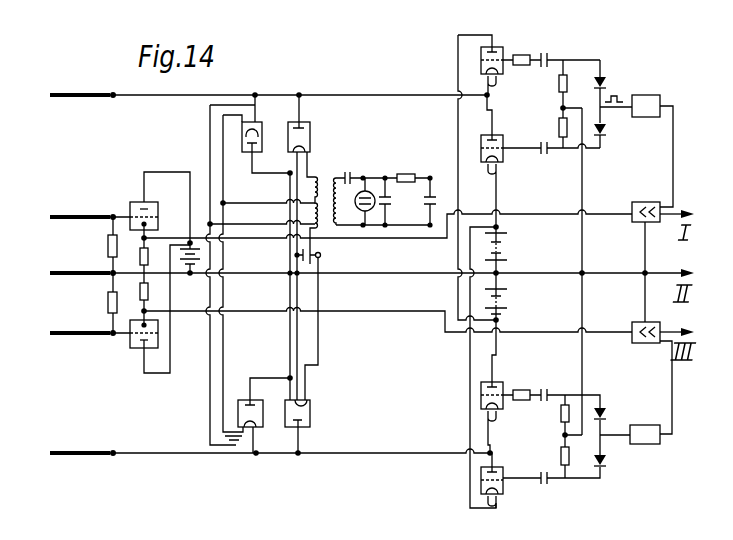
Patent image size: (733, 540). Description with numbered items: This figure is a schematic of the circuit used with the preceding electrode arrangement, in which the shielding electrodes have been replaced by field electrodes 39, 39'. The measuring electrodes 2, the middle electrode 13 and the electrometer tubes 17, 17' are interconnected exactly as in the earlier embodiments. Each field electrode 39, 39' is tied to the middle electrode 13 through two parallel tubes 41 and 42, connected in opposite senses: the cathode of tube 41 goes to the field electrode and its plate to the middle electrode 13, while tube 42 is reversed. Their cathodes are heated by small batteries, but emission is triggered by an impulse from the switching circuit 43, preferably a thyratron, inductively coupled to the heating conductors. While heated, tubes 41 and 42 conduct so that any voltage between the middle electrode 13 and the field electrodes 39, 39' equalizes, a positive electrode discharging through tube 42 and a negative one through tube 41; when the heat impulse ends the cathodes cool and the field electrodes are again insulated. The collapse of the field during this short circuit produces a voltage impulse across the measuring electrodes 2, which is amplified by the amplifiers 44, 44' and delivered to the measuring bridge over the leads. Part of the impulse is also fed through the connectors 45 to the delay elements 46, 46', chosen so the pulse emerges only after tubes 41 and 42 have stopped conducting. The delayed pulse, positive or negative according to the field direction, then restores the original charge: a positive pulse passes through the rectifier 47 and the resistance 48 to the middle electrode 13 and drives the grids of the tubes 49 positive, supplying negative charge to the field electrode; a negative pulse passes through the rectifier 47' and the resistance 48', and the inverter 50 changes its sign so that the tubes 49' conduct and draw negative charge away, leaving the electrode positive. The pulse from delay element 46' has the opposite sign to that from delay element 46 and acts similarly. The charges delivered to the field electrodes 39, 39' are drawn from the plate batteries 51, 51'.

The field electrode 39 is at (257, 96).
The field electrode 39' is at (256, 455).
The measuring electrodes 2 is at (80, 275).
The middle electrode 13 is at (357, 273).
The electrometer tube 17 is at (148, 206).
The electrometer tube 17' is at (139, 313).
The tube 41 is at (265, 120).
The tube 42 is at (312, 135).
The switching circuit 43 is at (386, 200).
The tubes 49 is at (482, 301).
The tubes 49' is at (488, 245).
The inverter 50 is at (537, 53).
The resistance 48 is at (540, 124).
The resistance 48' is at (540, 90).
The rectifier 47 is at (615, 142).
The rectifier 47' is at (616, 68).
The delay element 46 is at (651, 83).
The delay element 46' is at (646, 455).
The connector 45 is at (673, 155).
The amplifier 44 is at (656, 198).
The amplifier 44' is at (661, 355).
The plate battery 51 is at (515, 250).
The plate battery 51' is at (517, 296).